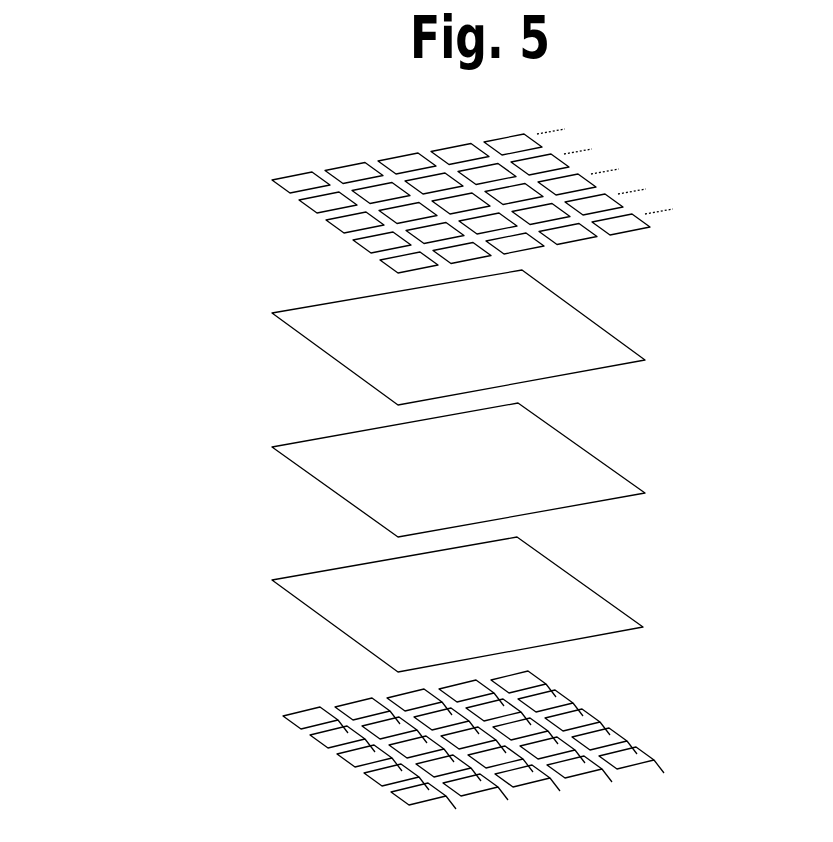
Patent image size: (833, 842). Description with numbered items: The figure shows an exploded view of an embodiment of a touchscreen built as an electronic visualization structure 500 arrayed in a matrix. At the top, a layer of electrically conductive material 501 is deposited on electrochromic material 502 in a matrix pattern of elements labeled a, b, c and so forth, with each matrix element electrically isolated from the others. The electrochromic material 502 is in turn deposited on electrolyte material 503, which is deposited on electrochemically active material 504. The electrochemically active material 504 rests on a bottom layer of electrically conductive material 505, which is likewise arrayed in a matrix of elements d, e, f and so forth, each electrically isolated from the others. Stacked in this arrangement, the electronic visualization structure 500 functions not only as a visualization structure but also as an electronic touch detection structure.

The electronic visualization structure 500 is at (129, 142).
The electrically conductive material 501 is at (593, 210).
The electrochromic material 502 is at (585, 340).
The electrolyte material 503 is at (583, 467).
The electrochemically active material 504 is at (583, 601).
The electrically conductive material 505 is at (590, 737).